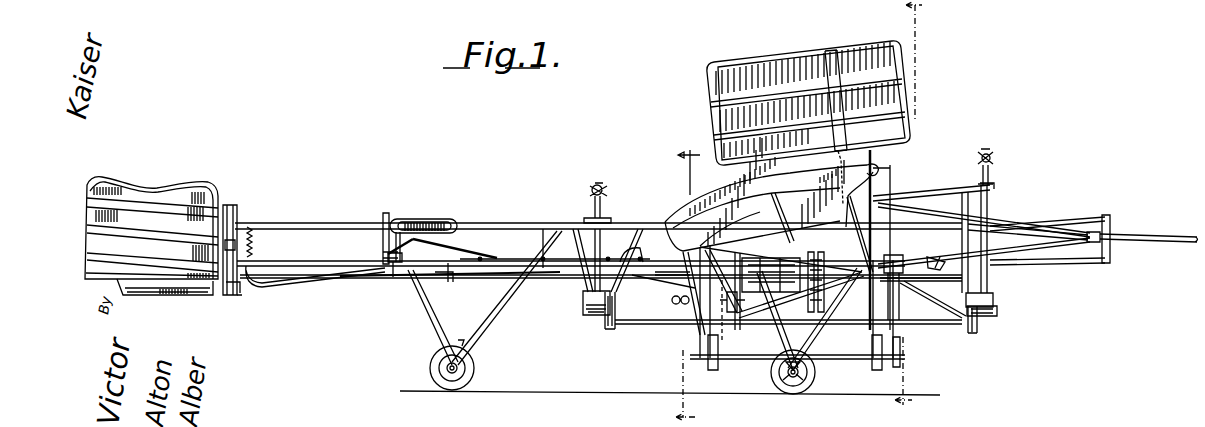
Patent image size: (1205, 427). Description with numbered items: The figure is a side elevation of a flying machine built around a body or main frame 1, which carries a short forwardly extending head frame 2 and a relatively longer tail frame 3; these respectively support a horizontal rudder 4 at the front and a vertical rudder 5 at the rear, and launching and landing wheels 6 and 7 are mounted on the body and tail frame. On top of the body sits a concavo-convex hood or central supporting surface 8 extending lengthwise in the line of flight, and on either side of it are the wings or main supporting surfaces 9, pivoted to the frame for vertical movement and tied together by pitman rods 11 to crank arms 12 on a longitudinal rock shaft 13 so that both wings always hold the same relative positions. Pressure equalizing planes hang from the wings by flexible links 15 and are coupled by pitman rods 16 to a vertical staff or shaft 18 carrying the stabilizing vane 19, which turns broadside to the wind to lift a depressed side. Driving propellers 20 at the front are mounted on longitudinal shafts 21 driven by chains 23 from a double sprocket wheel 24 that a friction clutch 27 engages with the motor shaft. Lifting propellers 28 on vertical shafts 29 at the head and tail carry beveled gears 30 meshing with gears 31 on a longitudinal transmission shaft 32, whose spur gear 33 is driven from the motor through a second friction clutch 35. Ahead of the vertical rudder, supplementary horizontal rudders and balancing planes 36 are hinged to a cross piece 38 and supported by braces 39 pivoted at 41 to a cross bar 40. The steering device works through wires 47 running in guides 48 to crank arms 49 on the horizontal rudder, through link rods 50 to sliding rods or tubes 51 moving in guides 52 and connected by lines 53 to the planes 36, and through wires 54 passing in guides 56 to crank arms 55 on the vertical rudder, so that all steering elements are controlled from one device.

The body or main frame 1 is at (648, 217).
The head frame 2 is at (933, 187).
The tail frame 3 is at (599, 238).
The horizontal rudder 4 is at (1142, 235).
The vertical rudder 5 is at (212, 188).
The launching and landing wheel 6 is at (800, 392).
The launching and landing wheel 7 is at (474, 368).
The hood or central supporting surface 8 is at (722, 195).
The wings or main supporting surfaces 9 is at (769, 194).
The pitman rods 11 is at (694, 322).
The crank arms 12 is at (722, 342).
The rock shaft 13 is at (845, 361).
The links or flexible connections 15 is at (767, 290).
The pitman rods 16 is at (822, 216).
The vertical staff or shaft 18 is at (818, 52).
The vertical stabilizing plane or vane 19 is at (866, 44).
The driving propellers 20 is at (934, 259).
The longitudinal shafts 21 is at (892, 255).
The chains 23 is at (820, 268).
The double sprocket wheel 24 is at (830, 322).
The friction clutch 27 is at (806, 308).
The lifting propellers 28 is at (603, 190).
The vertical shafts 29 is at (610, 204).
The beveled gears 30 is at (592, 316).
The beveled gears 31 is at (608, 330).
The transmission shaft 32 is at (642, 325).
The spur gear 33 is at (732, 312).
The friction clutch 35 is at (804, 359).
The supplementary horizontal rudders and balancing planes 36 is at (432, 218).
The cross piece 38 is at (383, 255).
The braces 39 is at (416, 247).
The cross bar 40 is at (394, 277).
The pivot 41 is at (365, 274).
The wires 47 is at (1058, 216).
The guides 48 is at (975, 268).
The crank arms 49 is at (1112, 257).
The link rods 50 is at (657, 268).
The sliding rods or tubes 51 is at (530, 257).
The guides 52 is at (545, 270).
The lines 53 is at (470, 232).
The wires 54 is at (486, 276).
The crank arms 55 is at (246, 290).
The guides 56 is at (448, 276).